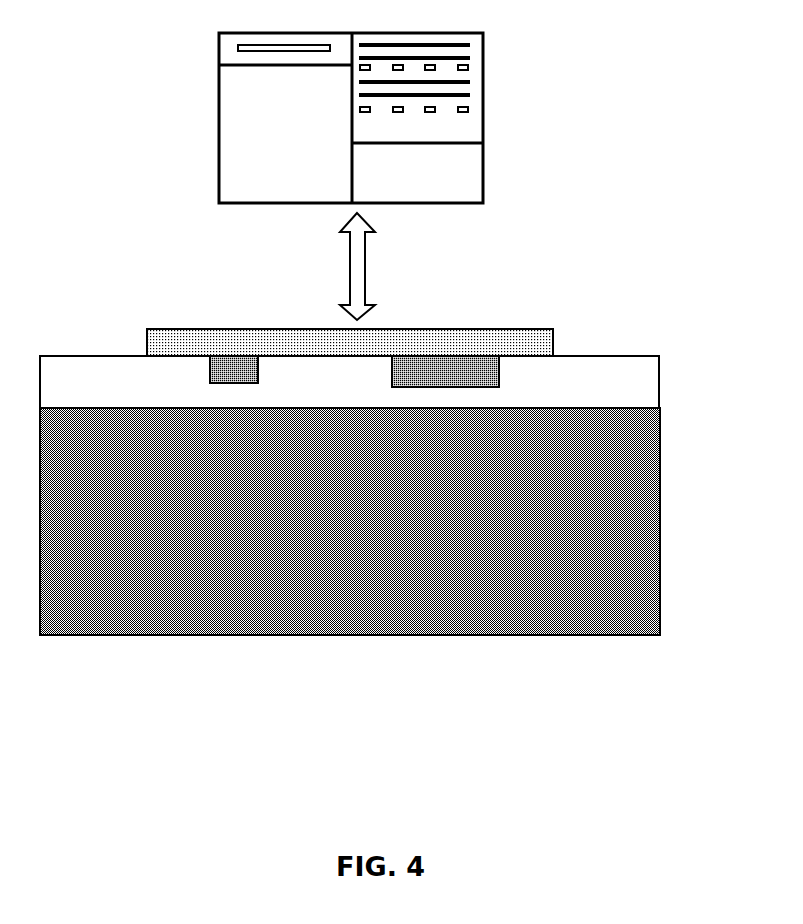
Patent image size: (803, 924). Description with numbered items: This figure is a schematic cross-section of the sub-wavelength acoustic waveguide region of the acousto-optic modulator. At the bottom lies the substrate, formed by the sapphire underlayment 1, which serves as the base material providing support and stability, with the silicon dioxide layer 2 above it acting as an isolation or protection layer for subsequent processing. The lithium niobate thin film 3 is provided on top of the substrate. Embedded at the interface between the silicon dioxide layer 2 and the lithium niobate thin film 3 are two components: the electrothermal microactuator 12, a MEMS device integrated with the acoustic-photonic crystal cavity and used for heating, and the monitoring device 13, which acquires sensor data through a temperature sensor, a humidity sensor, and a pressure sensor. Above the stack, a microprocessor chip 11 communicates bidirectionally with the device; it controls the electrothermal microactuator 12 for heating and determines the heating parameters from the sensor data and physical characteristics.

The sapphire underlayment 1 is at (640, 473).
The silicon dioxide layer 2 is at (632, 385).
The lithium niobate thin film 3 is at (537, 345).
The microprocessor chip 11 is at (392, 173).
The electrothermal microactuator (MEMS) 12 is at (500, 370).
The monitoring device 13 is at (210, 363).